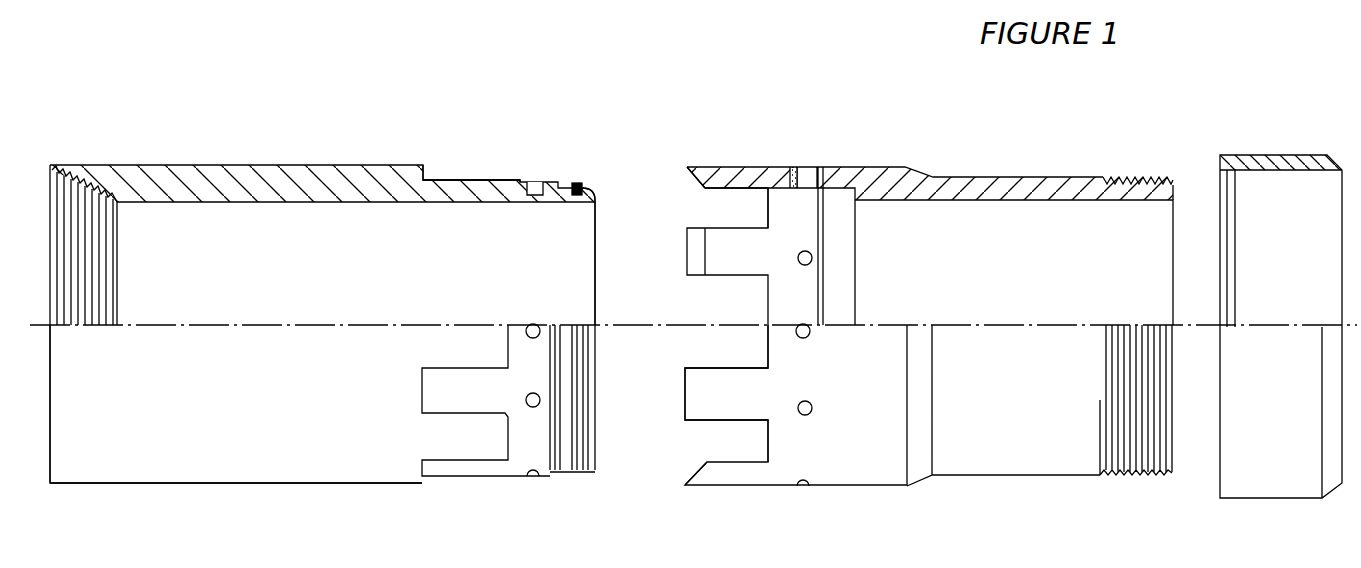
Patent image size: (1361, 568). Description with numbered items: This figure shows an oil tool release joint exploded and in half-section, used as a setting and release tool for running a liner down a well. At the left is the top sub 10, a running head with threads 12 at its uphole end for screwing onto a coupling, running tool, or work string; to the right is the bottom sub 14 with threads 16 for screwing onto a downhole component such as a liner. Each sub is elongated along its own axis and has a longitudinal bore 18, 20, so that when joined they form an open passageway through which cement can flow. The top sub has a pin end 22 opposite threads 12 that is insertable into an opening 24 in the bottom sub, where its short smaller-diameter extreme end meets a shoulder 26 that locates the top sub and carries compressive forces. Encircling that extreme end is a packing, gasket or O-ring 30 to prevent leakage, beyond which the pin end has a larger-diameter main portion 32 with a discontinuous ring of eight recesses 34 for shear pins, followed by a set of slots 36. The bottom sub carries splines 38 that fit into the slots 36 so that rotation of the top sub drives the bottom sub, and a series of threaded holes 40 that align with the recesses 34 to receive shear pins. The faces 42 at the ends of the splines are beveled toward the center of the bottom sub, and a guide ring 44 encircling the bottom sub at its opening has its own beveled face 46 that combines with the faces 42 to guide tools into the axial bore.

The top sub 10 is at (350, 165).
The threads 12 is at (55, 222).
The bottom sub 14 is at (980, 177).
The threads 16 is at (1148, 180).
The longitudinal bore 18 is at (386, 307).
The longitudinal bore 20 is at (1000, 293).
The pin end 22 is at (611, 189).
The opening 24 is at (700, 205).
The shoulder 26 is at (853, 192).
The packing, gasket or O-ring 30 is at (582, 185).
The main portion 32 is at (512, 182).
The recesses 34 is at (535, 182).
The slots 36 is at (443, 180).
The splines 38 is at (703, 191).
The threaded holes 40 is at (828, 167).
The beveled faces 42 is at (695, 183).
The guide ring 44 is at (1260, 155).
The beveled face 46 is at (1222, 170).